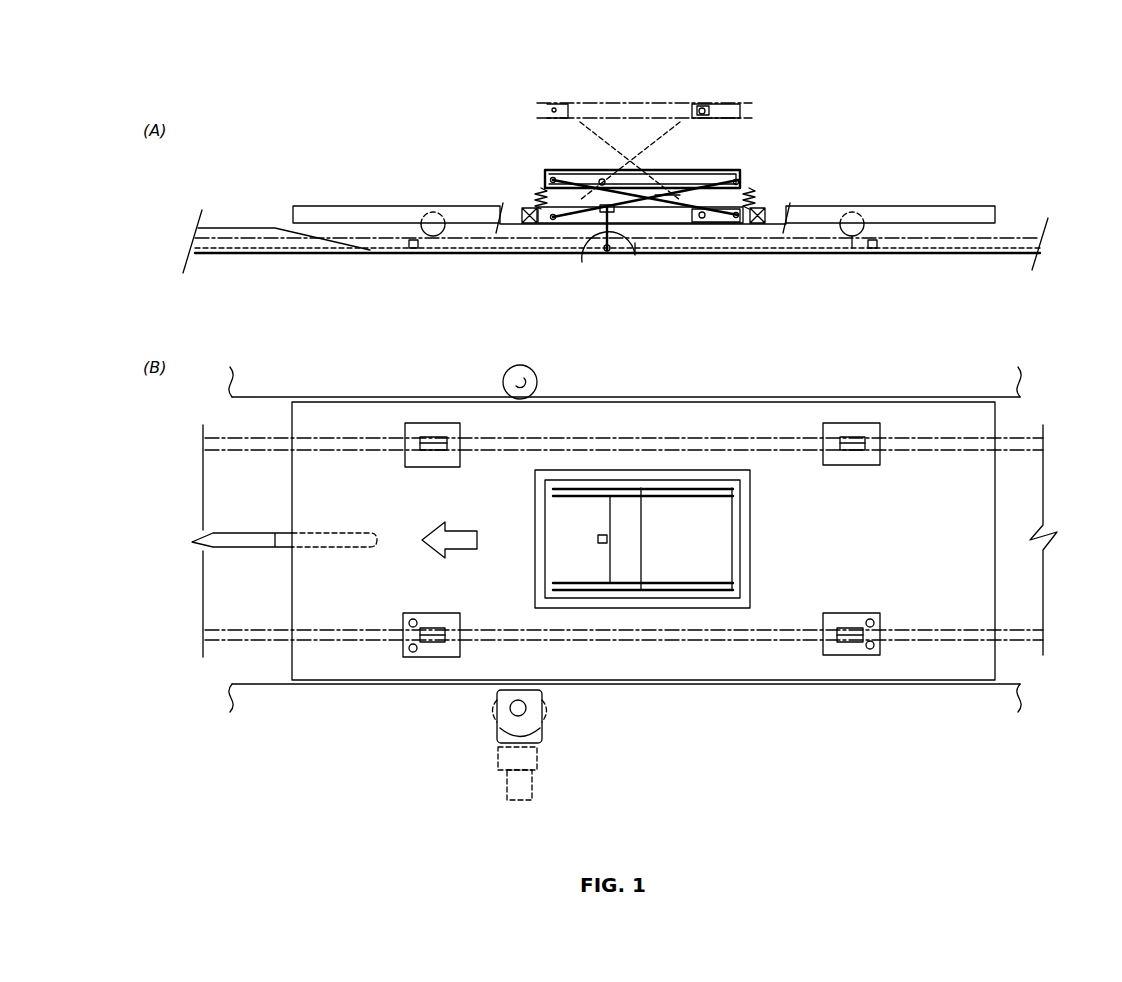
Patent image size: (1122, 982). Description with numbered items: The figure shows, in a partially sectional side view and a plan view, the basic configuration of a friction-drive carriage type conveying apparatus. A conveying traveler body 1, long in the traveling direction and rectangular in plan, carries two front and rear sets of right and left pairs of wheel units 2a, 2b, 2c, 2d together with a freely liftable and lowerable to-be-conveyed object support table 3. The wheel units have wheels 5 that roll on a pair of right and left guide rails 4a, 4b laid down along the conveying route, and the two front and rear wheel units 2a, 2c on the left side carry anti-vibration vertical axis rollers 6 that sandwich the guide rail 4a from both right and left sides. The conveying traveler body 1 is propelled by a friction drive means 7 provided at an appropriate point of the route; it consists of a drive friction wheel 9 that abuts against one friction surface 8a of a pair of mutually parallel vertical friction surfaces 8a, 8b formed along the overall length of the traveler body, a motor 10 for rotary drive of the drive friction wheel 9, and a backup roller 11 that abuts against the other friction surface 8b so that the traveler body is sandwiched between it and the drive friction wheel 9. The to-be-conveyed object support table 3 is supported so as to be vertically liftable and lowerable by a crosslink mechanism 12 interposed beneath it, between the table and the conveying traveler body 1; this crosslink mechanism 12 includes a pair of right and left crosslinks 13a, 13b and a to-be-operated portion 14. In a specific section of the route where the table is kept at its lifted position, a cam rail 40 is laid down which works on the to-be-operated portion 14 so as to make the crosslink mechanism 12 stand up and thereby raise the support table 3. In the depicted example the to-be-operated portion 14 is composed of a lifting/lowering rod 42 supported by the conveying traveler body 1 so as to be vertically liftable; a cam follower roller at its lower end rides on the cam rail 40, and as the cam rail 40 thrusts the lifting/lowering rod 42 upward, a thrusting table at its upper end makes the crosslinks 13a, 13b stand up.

In FIG. 1A, the conveying traveler body 1 is at (935, 207).
In FIG. 1B, the conveying traveler body 1 is at (643, 541).
In FIG. 1B, the wheel unit 2a is at (430, 657).
In FIG. 1B, the wheel unit 2b is at (433, 423).
In FIG. 1B, the wheel unit 2c is at (850, 655).
In FIG. 1B, the wheel unit 2d is at (855, 423).
In FIG. 1A, the to-be-conveyed object support table 3 is at (673, 205).
In FIG. 1B, the to-be-conveyed object support table 3 is at (690, 525).
In FIG. 1A, the guide rail 4a is at (985, 240).
In FIG. 1B, the guide rail 4a is at (205, 640).
In FIG. 1B, the guide rail 4b is at (205, 440).
In FIG. 1A, the wheel 5 is at (438, 236).
In FIG. 1B, the wheel 5 is at (420, 440).
In FIG. 1A, the anti-vibration vertical axis roller 6 is at (413, 249).
In FIG. 1B, the anti-vibration vertical axis roller 6 is at (409, 648).
In FIG. 1B, the friction drive means 7 is at (498, 760).
In FIG. 1B, the friction surface 8a is at (637, 684).
In FIG. 1B, the friction surface 8b is at (645, 397).
In FIG. 1B, the drive friction wheel 9 is at (545, 705).
In FIG. 1B, the motor 10 is at (537, 790).
In FIG. 1B, the backup roller 11 is at (520, 365).
In FIG. 1A, the crosslink mechanism 12 is at (573, 172).
In FIG. 1B, the crosslink mechanism 12 is at (672, 600).
In FIG. 1A, the crosslink 13a is at (668, 217).
In FIG. 1B, the crosslink 13a is at (590, 590).
In FIG. 1B, the crosslink 13b is at (590, 488).
In FIG. 1A, the to-be-operated portion 14 is at (595, 262).
In FIG. 1B, the to-be-operated portion 14 is at (598, 539).
In FIG. 1A, the cam rail 40 is at (232, 228).
In FIG. 1B, the cam rail 40 is at (240, 547).
In FIG. 1A, the lifting/lowering rod 42 is at (635, 253).